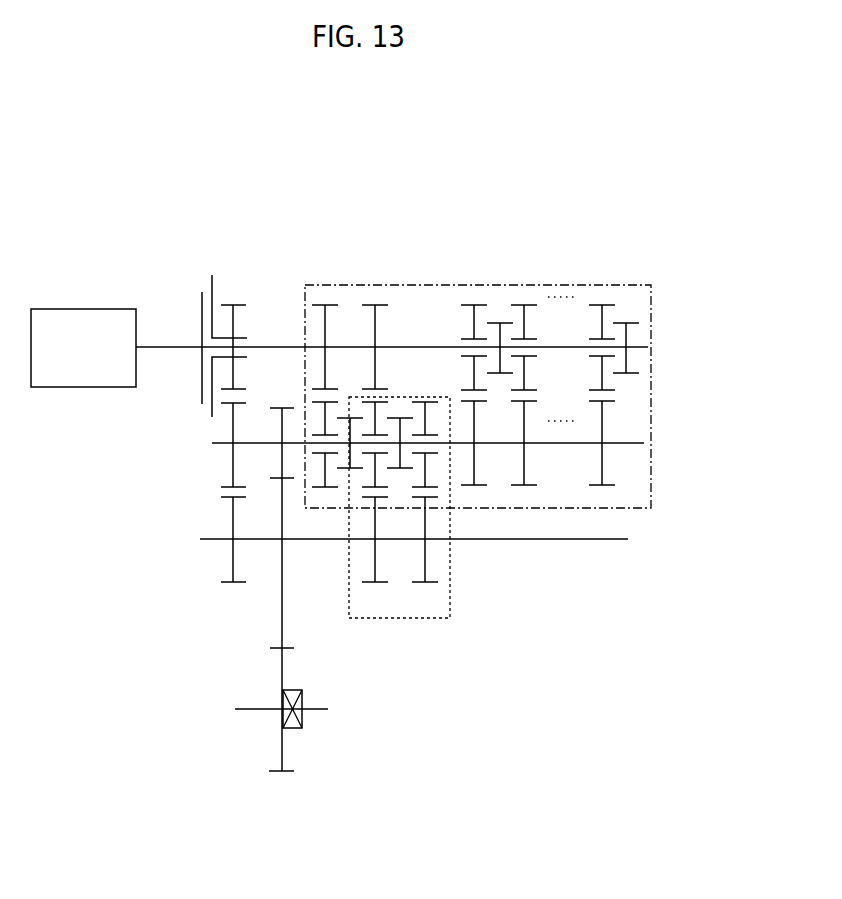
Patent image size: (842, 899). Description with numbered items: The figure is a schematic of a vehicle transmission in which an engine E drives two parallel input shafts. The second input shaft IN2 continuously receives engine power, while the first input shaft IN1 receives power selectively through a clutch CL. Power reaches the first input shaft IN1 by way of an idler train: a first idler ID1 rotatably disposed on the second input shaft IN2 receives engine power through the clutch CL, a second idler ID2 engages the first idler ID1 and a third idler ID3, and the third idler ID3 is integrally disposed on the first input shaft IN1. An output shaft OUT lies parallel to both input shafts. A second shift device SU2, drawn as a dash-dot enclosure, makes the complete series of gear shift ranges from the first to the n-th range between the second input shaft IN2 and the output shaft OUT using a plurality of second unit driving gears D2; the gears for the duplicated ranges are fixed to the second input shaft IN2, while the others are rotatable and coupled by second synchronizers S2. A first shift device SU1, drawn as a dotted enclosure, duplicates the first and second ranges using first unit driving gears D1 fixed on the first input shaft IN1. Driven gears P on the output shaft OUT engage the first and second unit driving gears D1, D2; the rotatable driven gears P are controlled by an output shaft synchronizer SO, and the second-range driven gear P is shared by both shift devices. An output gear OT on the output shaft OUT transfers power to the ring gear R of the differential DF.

The engine E is at (85, 309).
The clutch CL is at (206, 273).
The first idler ID1 is at (233, 305).
The second idler ID2 is at (233, 490).
The third idler ID3 is at (235, 584).
The output gear OT is at (276, 408).
The output shaft OUT is at (644, 443).
The first input shaft IN1 is at (605, 539).
The second input shaft IN2 is at (656, 345).
The second unit driving gears D2 is at (325, 305).
The output shaft synchronizer SO is at (350, 418).
The second synchronizer S2 is at (500, 323).
The first shift device SU1 is at (450, 599).
The second shift device SU2 is at (518, 285).
The first unit driving gears D1 is at (375, 584).
The driven gears P is at (602, 487).
The differential DF is at (258, 733).
The ring gear R is at (285, 772).